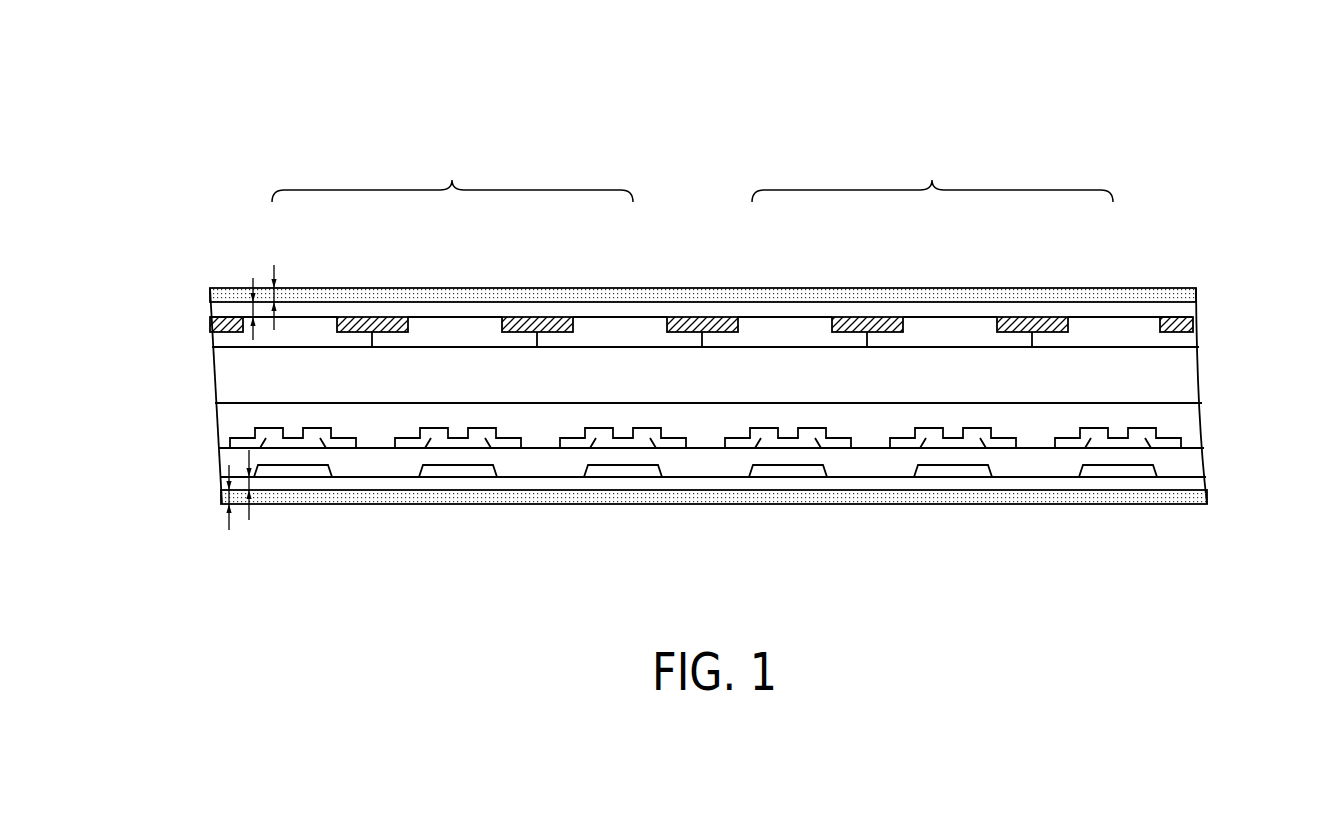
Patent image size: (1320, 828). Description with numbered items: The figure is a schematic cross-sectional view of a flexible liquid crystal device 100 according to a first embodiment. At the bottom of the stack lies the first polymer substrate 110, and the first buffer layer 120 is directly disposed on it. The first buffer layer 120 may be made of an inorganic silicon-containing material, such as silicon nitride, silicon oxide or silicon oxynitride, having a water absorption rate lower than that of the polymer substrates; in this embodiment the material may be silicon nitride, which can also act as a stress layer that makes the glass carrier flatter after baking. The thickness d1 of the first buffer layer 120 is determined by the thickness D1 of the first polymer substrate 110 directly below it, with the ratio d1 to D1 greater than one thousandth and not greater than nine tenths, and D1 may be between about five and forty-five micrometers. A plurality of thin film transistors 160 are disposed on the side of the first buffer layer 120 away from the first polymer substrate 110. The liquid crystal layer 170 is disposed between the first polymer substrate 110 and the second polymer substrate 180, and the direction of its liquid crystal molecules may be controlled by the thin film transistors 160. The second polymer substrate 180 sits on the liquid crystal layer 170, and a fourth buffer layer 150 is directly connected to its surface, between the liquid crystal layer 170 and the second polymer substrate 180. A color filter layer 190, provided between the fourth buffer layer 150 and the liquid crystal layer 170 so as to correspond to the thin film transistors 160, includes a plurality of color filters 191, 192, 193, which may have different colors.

The flexible liquid crystal device 100 is at (231, 126).
The first polymer substrate 110 is at (1197, 498).
The first buffer layer 120 is at (1197, 482).
The fourth buffer layer 150 is at (1186, 310).
The thin film transistors 160 is at (227, 426).
The liquid crystal layer 170 is at (734, 388).
The second polymer substrate 180 is at (1186, 297).
The color filter layer 190 is at (692, 173).
The color filter 191 is at (609, 330).
The color filter 192 is at (456, 330).
The color filter 193 is at (307, 330).
The thickness of the first polymer substrate D1 is at (274, 266).
The thickness of the first buffer layer d1 is at (253, 280).